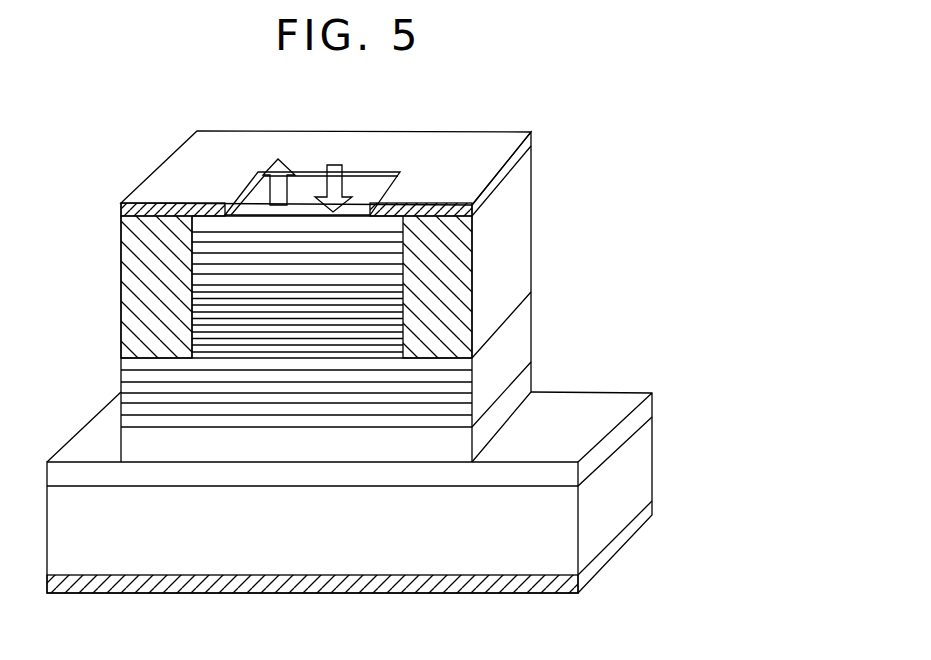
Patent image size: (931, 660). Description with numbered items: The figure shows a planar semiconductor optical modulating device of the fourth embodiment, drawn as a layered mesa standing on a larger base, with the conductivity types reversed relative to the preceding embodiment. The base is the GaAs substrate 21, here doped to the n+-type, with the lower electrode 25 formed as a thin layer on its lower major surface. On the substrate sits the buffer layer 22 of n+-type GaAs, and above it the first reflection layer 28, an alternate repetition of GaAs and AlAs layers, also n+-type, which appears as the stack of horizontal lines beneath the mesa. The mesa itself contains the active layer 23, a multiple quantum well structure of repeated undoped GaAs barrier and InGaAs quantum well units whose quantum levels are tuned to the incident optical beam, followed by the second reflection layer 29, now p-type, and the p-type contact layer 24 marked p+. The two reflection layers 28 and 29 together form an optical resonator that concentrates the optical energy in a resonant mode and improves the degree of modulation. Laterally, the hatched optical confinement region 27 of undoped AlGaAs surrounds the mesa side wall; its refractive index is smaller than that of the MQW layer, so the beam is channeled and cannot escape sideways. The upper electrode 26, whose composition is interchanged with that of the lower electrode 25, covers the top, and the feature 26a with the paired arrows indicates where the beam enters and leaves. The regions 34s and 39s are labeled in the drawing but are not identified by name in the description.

The GaAs substrate 21 is at (645, 467).
The buffer layer 22 is at (645, 408).
The active layer 23 is at (403, 297).
The contact layer 24 is at (478, 219).
The lower electrode 25 is at (622, 538).
The upper electrode 26 is at (478, 211).
The light emitting window in upper electrode 26a is at (367, 192).
The optical confinement region 27 is at (453, 313).
The first reflection layer 28 is at (460, 388).
The second reflection layer 29 is at (403, 248).
The side surface of mesa 34s is at (186, 318).
The side insulating region 39s is at (122, 288).